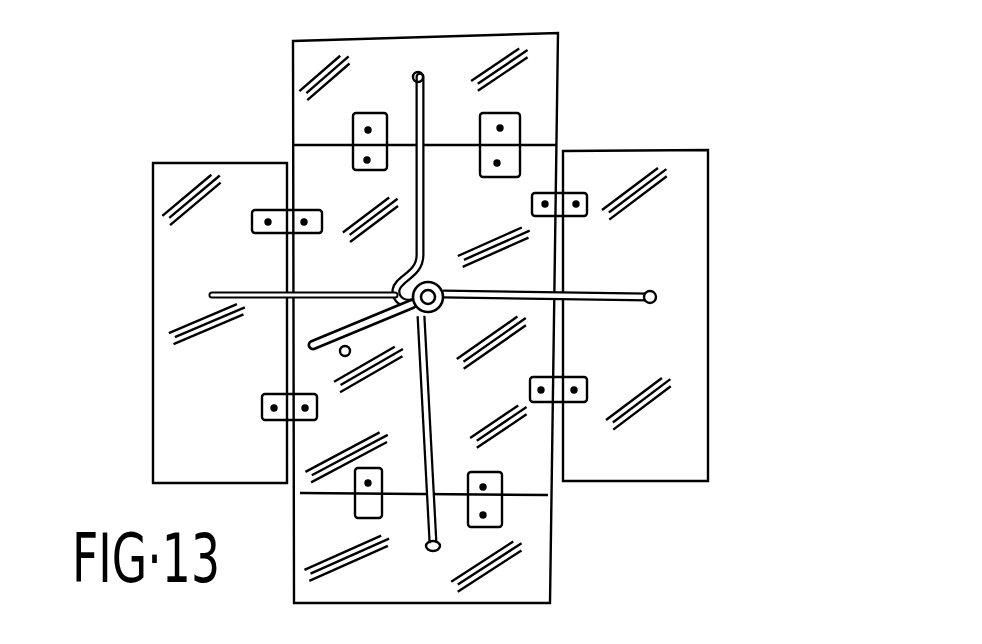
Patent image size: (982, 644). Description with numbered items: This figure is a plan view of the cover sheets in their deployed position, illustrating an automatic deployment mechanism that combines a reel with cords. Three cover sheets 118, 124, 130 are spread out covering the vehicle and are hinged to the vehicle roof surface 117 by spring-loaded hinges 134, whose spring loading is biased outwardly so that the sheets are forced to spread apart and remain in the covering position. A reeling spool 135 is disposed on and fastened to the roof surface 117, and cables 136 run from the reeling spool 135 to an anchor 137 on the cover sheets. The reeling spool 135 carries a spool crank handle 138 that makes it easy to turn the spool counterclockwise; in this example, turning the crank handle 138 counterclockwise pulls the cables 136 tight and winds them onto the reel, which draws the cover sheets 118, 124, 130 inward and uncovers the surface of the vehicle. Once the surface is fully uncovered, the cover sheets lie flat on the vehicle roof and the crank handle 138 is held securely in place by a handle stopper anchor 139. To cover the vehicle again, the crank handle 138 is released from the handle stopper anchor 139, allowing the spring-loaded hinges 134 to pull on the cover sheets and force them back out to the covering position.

The vehicle roof surface 117 is at (540, 158).
The cover sheet 118 is at (673, 182).
The cover sheet 124 is at (527, 538).
The cover sheet 130 is at (307, 57).
The spring-loaded hinge 134 is at (588, 387).
The reeling spool 135 is at (447, 287).
The cable 136 is at (437, 454).
The anchor 137 is at (658, 298).
The spool crank handle 138 is at (307, 345).
The handle stopper anchor 139 is at (332, 356).